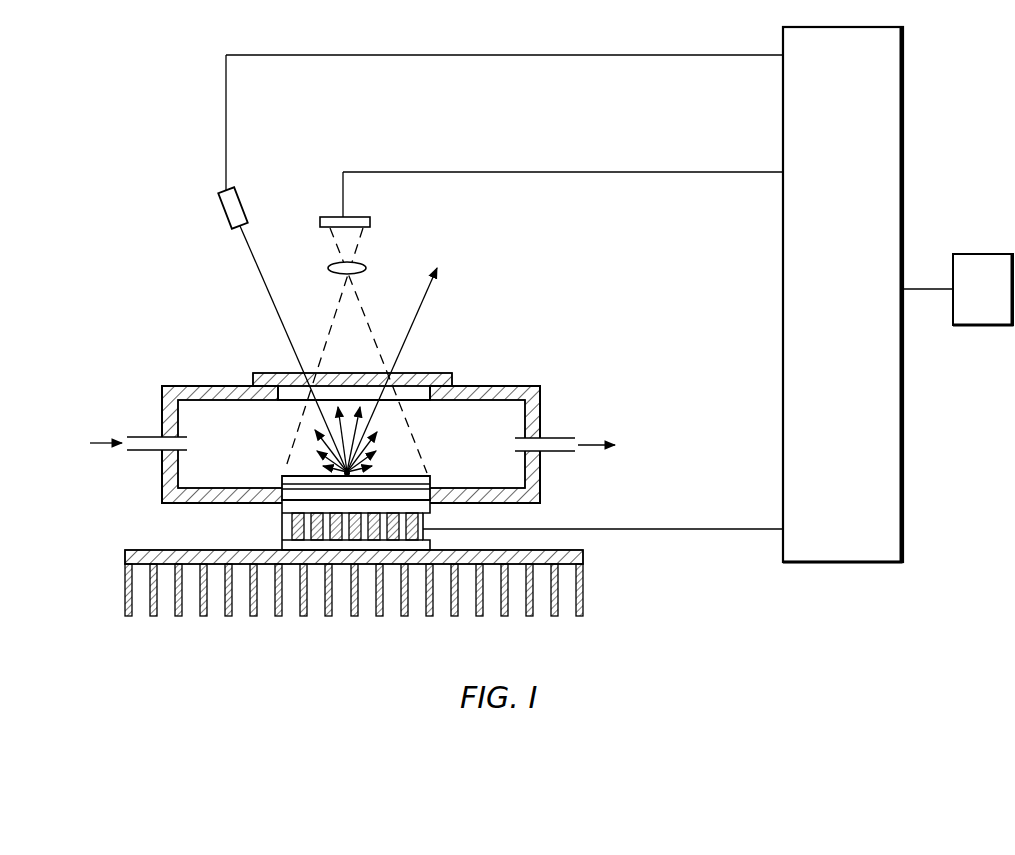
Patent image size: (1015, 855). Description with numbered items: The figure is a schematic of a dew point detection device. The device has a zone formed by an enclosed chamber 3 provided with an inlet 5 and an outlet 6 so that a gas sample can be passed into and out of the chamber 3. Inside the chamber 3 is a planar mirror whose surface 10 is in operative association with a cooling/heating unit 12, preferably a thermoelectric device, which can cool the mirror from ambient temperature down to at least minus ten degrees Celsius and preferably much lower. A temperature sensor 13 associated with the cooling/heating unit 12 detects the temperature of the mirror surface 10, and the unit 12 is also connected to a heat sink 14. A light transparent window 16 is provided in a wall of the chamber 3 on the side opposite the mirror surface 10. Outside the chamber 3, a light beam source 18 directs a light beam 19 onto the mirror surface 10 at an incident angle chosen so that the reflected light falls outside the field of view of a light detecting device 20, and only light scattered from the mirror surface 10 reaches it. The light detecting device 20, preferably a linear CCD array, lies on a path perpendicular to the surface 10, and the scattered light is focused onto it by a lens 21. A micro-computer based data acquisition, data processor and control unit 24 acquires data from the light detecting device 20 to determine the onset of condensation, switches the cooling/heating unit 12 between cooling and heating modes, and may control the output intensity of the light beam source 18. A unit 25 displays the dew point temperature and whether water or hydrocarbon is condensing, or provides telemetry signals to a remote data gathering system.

The enclosed chamber 3 is at (215, 406).
The inlet 5 is at (148, 436).
The outlet 6 is at (557, 438).
The mirror surface 10 is at (397, 478).
The cooling/heating unit 12 is at (270, 545).
The temperature sensor 13 is at (430, 477).
The heat sink 14 is at (584, 579).
The light transparent window 16 is at (430, 373).
The light beam source 18 is at (226, 218).
The light beam 19 is at (262, 282).
The light detecting device 20 is at (367, 213).
The lens 21 is at (363, 261).
The data acquisition, data processor and control unit 24 is at (850, 305).
The display/telemetry unit 25 is at (992, 305).